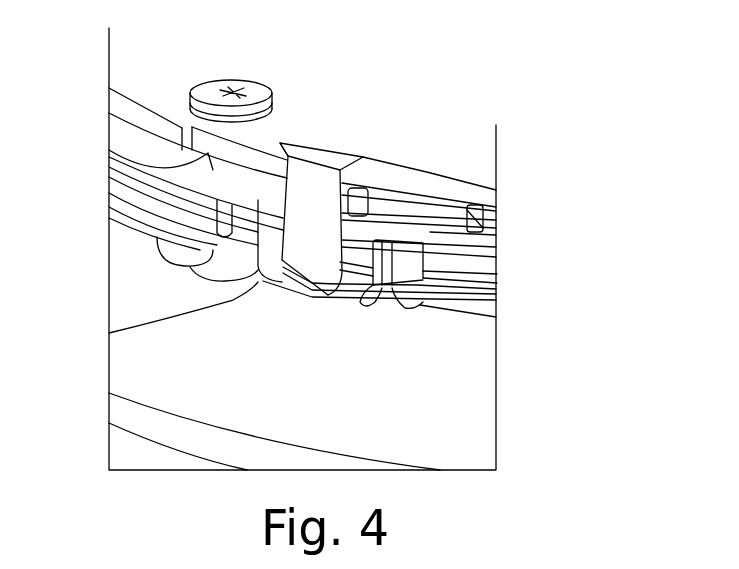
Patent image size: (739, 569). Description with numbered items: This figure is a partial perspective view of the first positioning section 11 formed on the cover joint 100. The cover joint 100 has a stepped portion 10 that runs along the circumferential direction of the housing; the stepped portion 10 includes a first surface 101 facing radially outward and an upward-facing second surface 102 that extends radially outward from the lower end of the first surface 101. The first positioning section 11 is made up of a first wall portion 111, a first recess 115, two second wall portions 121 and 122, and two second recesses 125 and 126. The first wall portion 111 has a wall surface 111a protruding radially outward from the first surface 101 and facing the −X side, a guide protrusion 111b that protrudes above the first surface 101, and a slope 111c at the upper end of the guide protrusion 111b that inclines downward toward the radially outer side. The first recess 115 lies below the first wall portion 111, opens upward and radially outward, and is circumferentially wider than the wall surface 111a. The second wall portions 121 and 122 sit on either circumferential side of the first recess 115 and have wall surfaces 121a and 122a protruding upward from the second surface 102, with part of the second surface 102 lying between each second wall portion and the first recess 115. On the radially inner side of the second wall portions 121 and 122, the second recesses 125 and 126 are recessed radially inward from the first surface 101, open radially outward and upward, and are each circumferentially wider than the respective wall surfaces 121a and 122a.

The stepped portion 10 is at (588, 218).
The cover joint 100 is at (505, 303).
The first surface 101 is at (470, 265).
The second surface 102 is at (475, 297).
The first positioning section 11 is at (337, 145).
The first wall portion 111 is at (280, 148).
The wall surface 111a is at (318, 256).
The guide protrusion 111b is at (366, 175).
The slope 111c is at (288, 148).
The first recess 115 is at (109, 333).
The second wall portion 121 is at (212, 280).
The wall surface 121a is at (200, 235).
The second wall portion 122 is at (415, 302).
The wall surface 122a is at (473, 230).
The second recess 125 is at (160, 163).
The second recess 126 is at (397, 253).